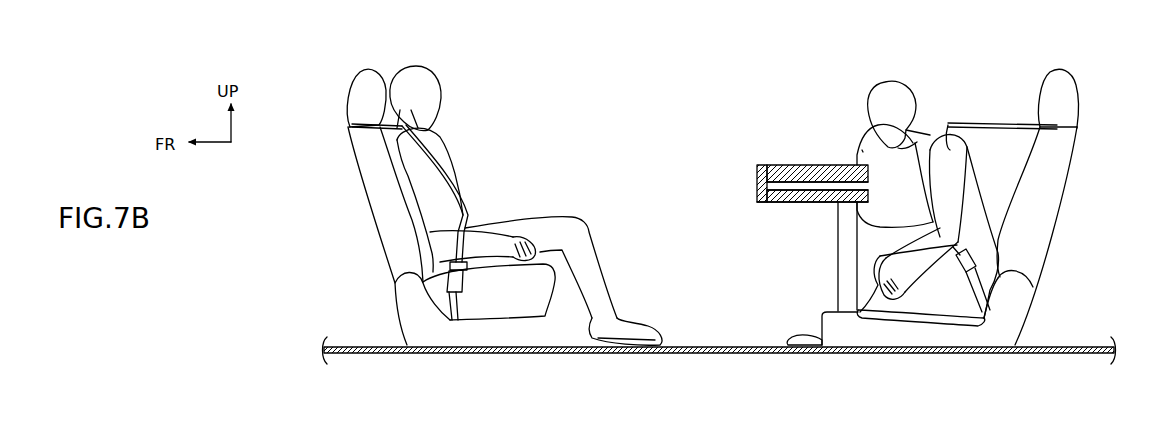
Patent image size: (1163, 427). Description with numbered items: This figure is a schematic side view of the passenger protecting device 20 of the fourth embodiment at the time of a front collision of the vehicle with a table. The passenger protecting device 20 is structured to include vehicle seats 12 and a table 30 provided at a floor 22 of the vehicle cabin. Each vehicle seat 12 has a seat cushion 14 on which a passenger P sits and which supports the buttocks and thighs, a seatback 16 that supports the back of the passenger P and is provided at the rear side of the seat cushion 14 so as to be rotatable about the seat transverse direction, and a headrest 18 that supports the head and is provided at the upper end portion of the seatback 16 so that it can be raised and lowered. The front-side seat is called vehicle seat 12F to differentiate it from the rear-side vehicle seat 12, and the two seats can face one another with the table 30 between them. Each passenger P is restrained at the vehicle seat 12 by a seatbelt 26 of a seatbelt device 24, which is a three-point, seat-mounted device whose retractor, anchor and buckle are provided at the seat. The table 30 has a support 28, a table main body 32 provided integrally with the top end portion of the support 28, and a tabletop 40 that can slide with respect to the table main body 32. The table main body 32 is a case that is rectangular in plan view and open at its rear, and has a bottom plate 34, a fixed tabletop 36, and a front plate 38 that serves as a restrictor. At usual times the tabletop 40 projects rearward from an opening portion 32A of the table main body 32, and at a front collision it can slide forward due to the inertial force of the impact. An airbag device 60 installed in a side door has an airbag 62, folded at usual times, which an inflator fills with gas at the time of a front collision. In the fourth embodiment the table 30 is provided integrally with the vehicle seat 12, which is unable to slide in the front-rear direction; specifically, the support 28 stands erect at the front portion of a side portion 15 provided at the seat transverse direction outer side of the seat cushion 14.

The vehicle seat 12 is at (1060, 66).
The vehicle seat (front-side) 12F is at (352, 78).
The seat cushion 14 is at (543, 290).
The side portion 15 is at (840, 330).
The seatback 16 is at (375, 220).
The headrest 18 is at (358, 103).
The passenger protecting device 20 is at (875, 132).
The floor 22 is at (1088, 347).
The seatbelt device 24 is at (464, 291).
The seatbelt 26 is at (462, 200).
The support 28 is at (838, 258).
The table 30 is at (808, 189).
The table main body 32 is at (808, 180).
The opening portion 32A is at (869, 186).
The bottom plate 34 is at (805, 203).
The fixed tabletop 36 is at (793, 165).
The front plate 38 is at (756, 192).
The tabletop 40 is at (776, 203).
The airbag device 60 is at (878, 125).
The airbag 62 is at (863, 152).
The passenger P is at (440, 82).